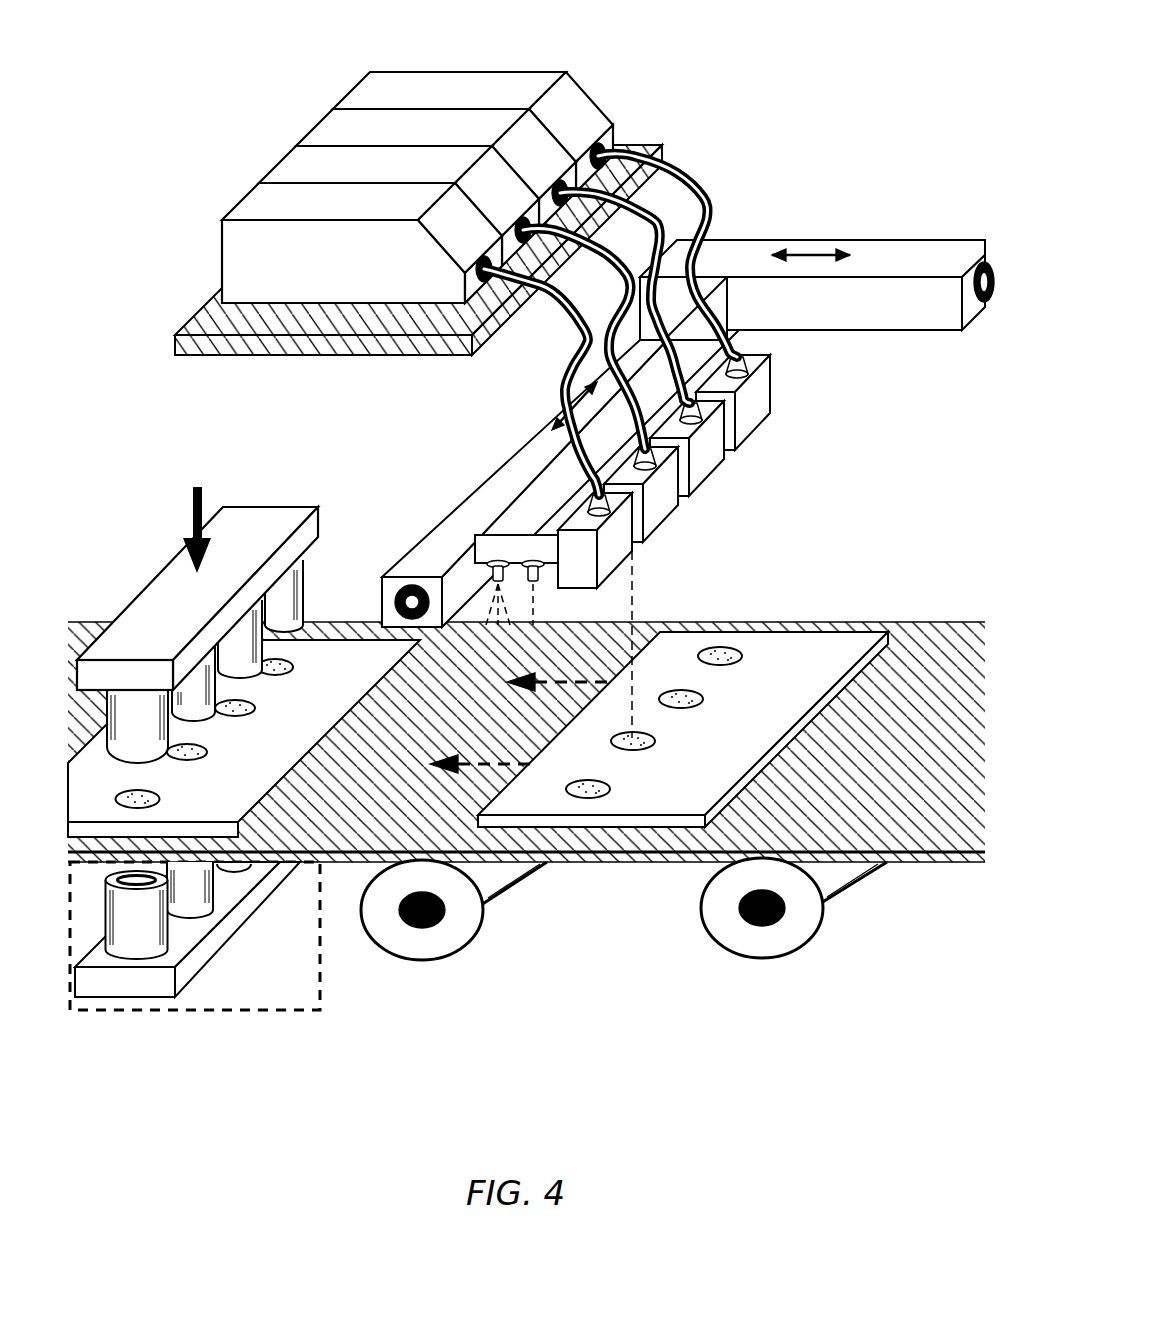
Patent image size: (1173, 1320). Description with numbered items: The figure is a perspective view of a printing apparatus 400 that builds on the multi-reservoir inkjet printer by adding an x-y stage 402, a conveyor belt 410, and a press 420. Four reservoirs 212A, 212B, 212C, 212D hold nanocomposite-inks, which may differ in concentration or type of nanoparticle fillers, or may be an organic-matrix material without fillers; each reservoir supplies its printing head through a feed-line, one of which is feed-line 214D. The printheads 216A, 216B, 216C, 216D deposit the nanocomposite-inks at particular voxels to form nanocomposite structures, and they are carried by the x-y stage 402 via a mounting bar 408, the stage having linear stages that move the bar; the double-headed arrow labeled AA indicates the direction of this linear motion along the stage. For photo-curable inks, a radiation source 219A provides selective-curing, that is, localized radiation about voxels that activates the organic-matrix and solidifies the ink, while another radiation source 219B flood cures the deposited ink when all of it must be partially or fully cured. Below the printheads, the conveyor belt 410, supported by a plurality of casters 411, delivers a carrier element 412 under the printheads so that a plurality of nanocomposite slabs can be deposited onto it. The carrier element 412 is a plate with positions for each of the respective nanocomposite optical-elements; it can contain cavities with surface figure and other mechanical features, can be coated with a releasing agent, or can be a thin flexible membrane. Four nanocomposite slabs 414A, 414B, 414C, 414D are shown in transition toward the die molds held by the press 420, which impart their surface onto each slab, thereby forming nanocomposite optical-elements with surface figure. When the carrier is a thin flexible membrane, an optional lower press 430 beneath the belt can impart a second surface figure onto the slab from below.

The reservoir 212A is at (245, 203).
The reservoir 212B is at (281, 162).
The reservoir 212C is at (314, 121).
The reservoir 212D is at (353, 88).
The feed-line 214D is at (697, 193).
The printhead 216A is at (618, 567).
The printhead 216B is at (665, 517).
The printing head 216C is at (708, 475).
The printing head 216D is at (753, 425).
The radiation source 219A is at (523, 560).
The radiation source 219B is at (490, 575).
The printing apparatus 400 is at (680, 1100).
The x-y stage 402 is at (937, 240).
The mounting bar 408 is at (510, 503).
The conveyor belt 410 is at (925, 870).
The casters 411 is at (707, 930).
The carrier element 412 is at (537, 807).
The nanocomposite slab 414A is at (158, 807).
The nanocomposite slab 414B is at (208, 752).
The nanocomposite slab 414C is at (255, 712).
The nanocomposite slab 414D is at (293, 668).
The press 420 is at (250, 510).
The lower press 430 is at (161, 1012).
The direction of travel AA is at (860, 241).